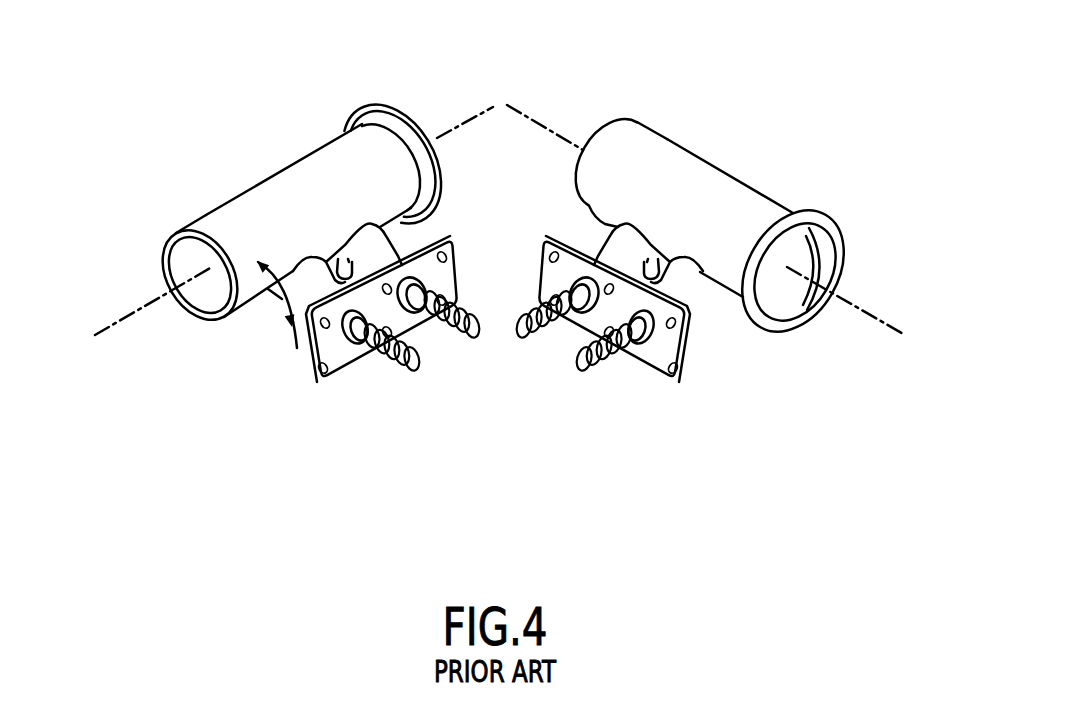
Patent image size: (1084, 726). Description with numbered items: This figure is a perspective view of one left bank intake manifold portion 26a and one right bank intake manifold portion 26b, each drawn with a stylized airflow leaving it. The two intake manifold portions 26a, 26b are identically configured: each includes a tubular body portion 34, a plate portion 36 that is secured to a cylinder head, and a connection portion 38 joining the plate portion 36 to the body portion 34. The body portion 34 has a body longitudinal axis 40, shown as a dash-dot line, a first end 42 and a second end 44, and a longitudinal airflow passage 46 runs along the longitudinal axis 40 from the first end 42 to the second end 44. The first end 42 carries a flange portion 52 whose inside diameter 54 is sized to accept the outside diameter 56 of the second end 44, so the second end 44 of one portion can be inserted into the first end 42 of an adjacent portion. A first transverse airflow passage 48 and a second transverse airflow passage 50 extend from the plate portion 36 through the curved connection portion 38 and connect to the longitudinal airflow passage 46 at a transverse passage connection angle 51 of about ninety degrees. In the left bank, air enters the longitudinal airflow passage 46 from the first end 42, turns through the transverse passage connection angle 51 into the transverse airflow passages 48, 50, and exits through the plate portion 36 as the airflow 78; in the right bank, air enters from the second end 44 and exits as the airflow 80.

The intake manifold portion 26a is at (260, 155).
The intake manifold portion 26b is at (743, 140).
The body portion 34 is at (303, 157).
The plate portion 36 is at (546, 241).
The connection portion 38 is at (290, 350).
The body longitudinal axis 40 is at (130, 317).
The first end 42 is at (381, 103).
The second end 44 is at (162, 253).
The longitudinal airflow passage 46 is at (177, 268).
The first transverse airflow passage 48 is at (426, 285).
The second transverse airflow passage 50 is at (348, 345).
The transverse passage connection angle 51 is at (280, 303).
The flange portion 52 is at (435, 192).
The inside diameter 54 is at (845, 272).
The outside diameter 56 is at (175, 228).
The airflow 78 is at (472, 332).
The airflow 80 is at (580, 376).